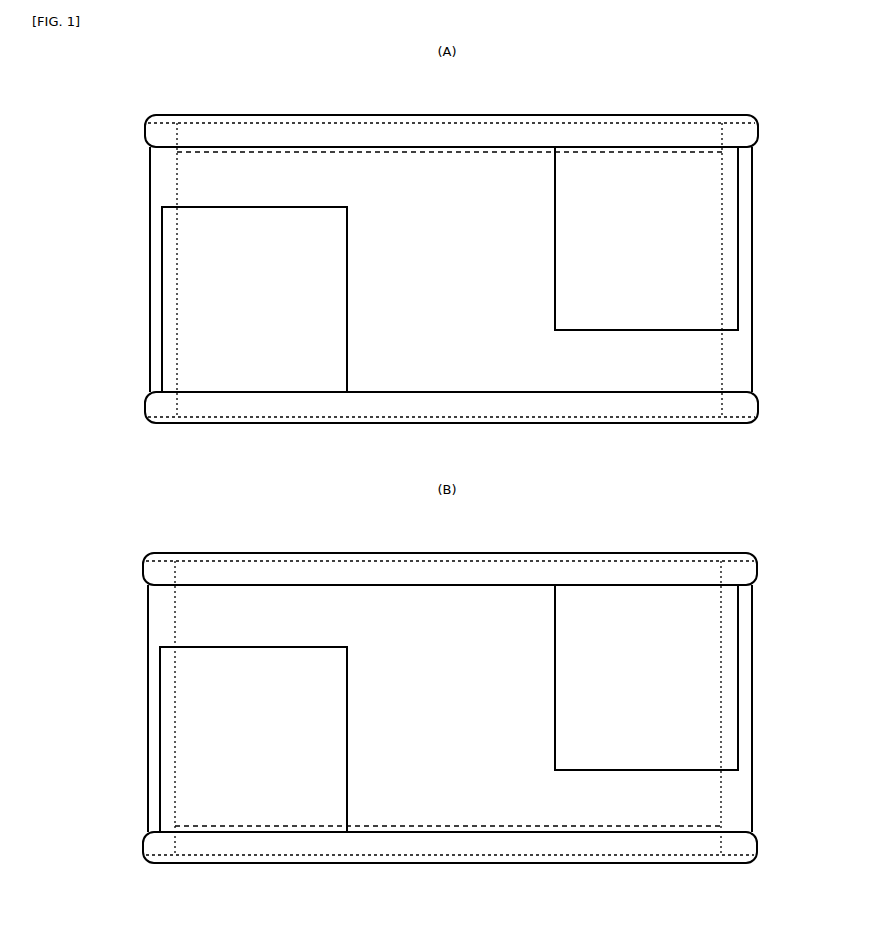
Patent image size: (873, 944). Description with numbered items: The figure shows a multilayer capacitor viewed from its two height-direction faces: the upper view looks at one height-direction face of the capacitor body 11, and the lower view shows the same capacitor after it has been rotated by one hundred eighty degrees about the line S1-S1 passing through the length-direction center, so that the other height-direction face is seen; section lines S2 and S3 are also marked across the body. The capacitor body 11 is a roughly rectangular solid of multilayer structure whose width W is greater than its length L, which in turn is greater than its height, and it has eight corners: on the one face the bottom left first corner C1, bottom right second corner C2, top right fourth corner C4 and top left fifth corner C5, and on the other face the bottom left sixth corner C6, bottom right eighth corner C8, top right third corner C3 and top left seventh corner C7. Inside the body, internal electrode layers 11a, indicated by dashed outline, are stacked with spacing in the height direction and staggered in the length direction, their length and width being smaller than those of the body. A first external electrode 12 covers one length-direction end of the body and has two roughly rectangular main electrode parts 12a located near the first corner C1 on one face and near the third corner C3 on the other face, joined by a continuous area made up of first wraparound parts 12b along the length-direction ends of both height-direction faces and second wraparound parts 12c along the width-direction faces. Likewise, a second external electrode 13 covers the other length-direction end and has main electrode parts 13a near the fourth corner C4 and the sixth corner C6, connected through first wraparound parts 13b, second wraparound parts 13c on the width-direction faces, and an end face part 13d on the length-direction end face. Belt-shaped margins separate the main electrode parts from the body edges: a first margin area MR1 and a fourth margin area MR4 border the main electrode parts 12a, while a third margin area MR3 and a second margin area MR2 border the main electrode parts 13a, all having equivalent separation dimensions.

The capacitor body 11 is at (150, 178).
The internal electrode layer 11a is at (432, 130).
The first external electrode 12 is at (388, 424).
The main electrode part 12a is at (250, 300).
The first wraparound part 12b is at (556, 405).
The second wraparound part 12c is at (145, 406).
The second external electrode 13 is at (508, 121).
The main electrode part 13a is at (645, 235).
The first wraparound part 13b is at (348, 130).
The second wraparound part 13c is at (145, 131).
The end face part 13d is at (448, 489).
The first margin area MR1 is at (150, 240).
The second margin area MR2 is at (148, 707).
The third margin area MR3 is at (752, 297).
The fourth margin area MR4 is at (752, 737).
The first corner C1 is at (147, 425).
The second corner C2 is at (750, 425).
The third corner C3 is at (750, 553).
The fourth corner C4 is at (750, 115).
The fifth corner C5 is at (147, 115).
The sixth corner C6 is at (145, 866).
The seventh corner C7 is at (145, 553).
The eighth corner C8 is at (750, 866).
The line S1- S1 is at (125, 252).
The direction S2 is at (248, 271).
The direction S3 is at (643, 271).
The length L is at (758, 553).
The width W is at (757, 865).